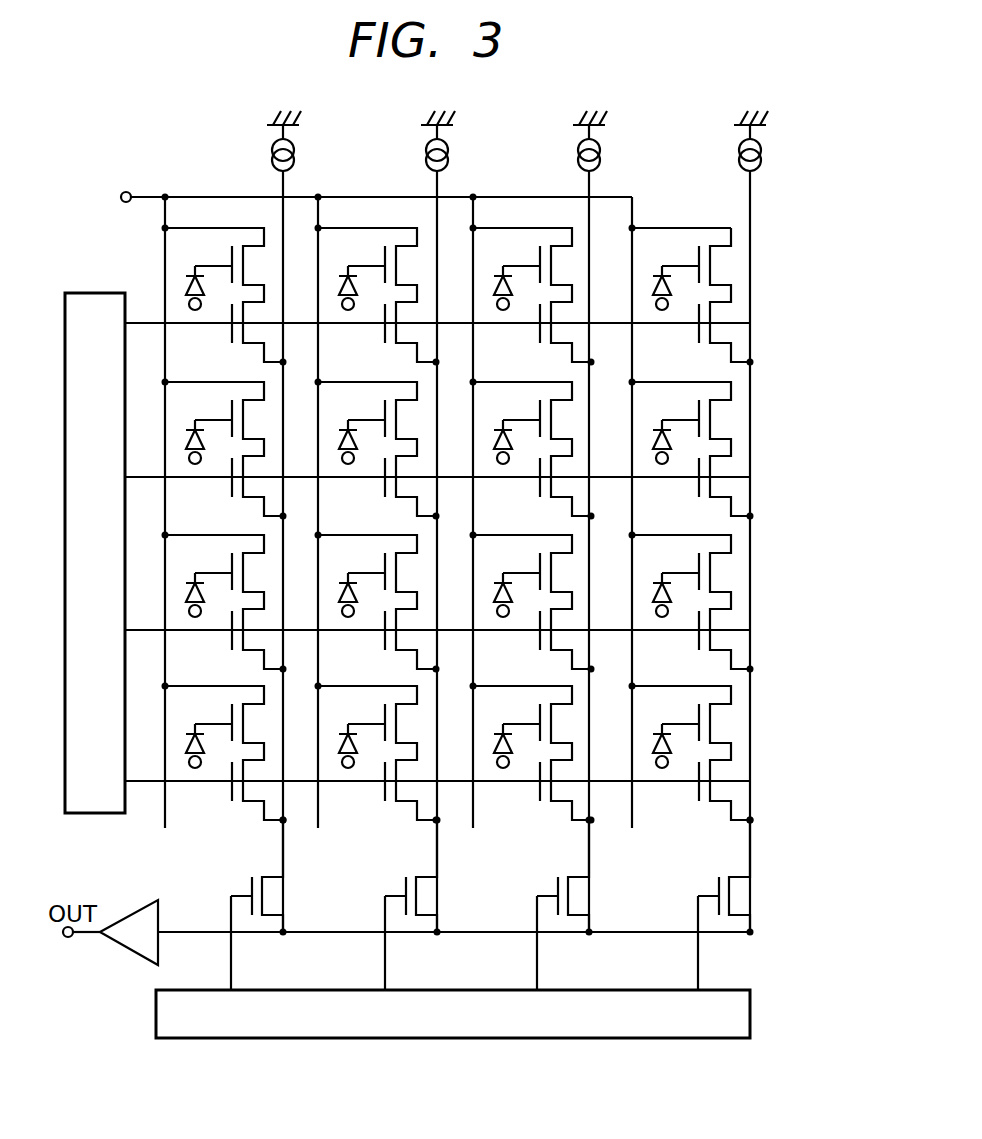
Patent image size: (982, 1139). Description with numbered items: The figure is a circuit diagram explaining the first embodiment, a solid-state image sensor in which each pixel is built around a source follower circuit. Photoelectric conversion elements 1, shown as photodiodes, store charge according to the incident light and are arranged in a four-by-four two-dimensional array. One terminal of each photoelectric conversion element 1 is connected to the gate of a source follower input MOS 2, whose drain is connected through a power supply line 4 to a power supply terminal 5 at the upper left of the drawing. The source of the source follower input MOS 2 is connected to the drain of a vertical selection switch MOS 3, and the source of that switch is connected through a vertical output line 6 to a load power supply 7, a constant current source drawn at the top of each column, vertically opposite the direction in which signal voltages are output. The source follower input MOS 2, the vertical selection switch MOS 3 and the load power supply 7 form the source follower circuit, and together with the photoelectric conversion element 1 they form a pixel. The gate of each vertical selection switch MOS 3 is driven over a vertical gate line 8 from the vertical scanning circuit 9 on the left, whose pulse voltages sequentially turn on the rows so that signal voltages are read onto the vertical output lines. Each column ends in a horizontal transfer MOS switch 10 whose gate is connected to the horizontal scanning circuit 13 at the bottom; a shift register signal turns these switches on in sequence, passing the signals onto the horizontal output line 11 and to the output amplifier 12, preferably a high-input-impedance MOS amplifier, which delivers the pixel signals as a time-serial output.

The photoelectric conversion element 1 is at (662, 276).
The source follower input MOS 2 is at (730, 266).
The vertical selection switch MOS 3 is at (711, 294).
The power supply line 4 is at (628, 792).
The power supply terminal 5 is at (123, 191).
The vertical output line 6 is at (750, 420).
The load power supply 7 is at (585, 157).
The vertical gate line 8 is at (185, 320).
The vertical scanning circuit 9 is at (98, 293).
The horizontal transfer MOS switch 10 is at (249, 886).
The horizontal output line 11 is at (212, 931).
The output amplifier 12 is at (130, 910).
The horizontal scanning circuit 13 is at (156, 1007).